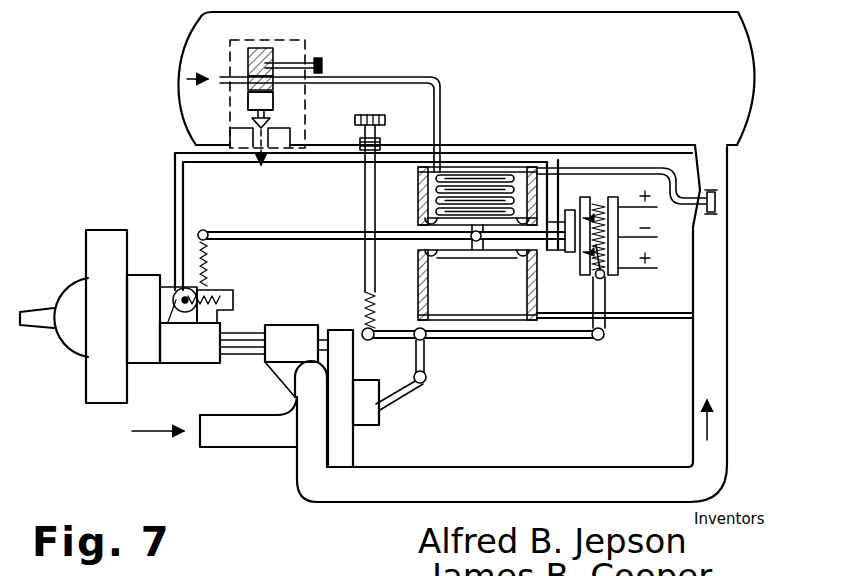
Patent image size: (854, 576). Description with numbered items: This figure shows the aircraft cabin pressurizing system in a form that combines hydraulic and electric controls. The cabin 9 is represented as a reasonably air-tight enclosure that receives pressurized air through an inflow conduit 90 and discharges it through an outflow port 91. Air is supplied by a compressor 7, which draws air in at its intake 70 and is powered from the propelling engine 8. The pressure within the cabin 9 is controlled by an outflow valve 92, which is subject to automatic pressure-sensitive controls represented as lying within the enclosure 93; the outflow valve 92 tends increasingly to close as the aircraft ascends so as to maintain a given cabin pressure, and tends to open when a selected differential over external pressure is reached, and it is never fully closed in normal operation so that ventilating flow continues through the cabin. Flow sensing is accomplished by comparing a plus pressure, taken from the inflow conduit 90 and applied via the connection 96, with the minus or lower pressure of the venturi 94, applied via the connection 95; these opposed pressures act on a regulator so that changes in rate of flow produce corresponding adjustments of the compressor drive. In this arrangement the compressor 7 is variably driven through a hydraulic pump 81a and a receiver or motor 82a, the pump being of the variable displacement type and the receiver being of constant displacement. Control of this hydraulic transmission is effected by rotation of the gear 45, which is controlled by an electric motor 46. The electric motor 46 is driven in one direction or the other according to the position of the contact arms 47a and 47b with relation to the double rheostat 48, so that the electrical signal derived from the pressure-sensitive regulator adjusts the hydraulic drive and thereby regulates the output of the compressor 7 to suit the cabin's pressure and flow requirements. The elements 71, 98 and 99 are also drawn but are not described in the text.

The compressor 7 is at (295, 437).
The propelling engine 8 is at (80, 290).
The cabin 9 is at (528, 14).
The gear 45 is at (209, 300).
The electric motor 46 is at (175, 298).
The contact arm 47a is at (580, 254).
The contact arm 47b is at (583, 220).
The double rheostat 48 is at (606, 270).
The compressor intake 70 is at (212, 438).
The valve body 71 is at (360, 420).
The variable displacement hydraulic pump 81a is at (190, 355).
The receiver or motor 82a is at (298, 305).
The inflow conduit 90 is at (537, 473).
The outflow port 91 is at (258, 152).
The outflow valve 92 is at (256, 118).
The enclosure 93 is at (241, 40).
The venturi 94 is at (714, 205).
The minus pressure connection 95 is at (658, 170).
The plus pressure connection 96 is at (632, 318).
The valve stem 98 is at (267, 60).
The fuel pipe 99 is at (272, 86).